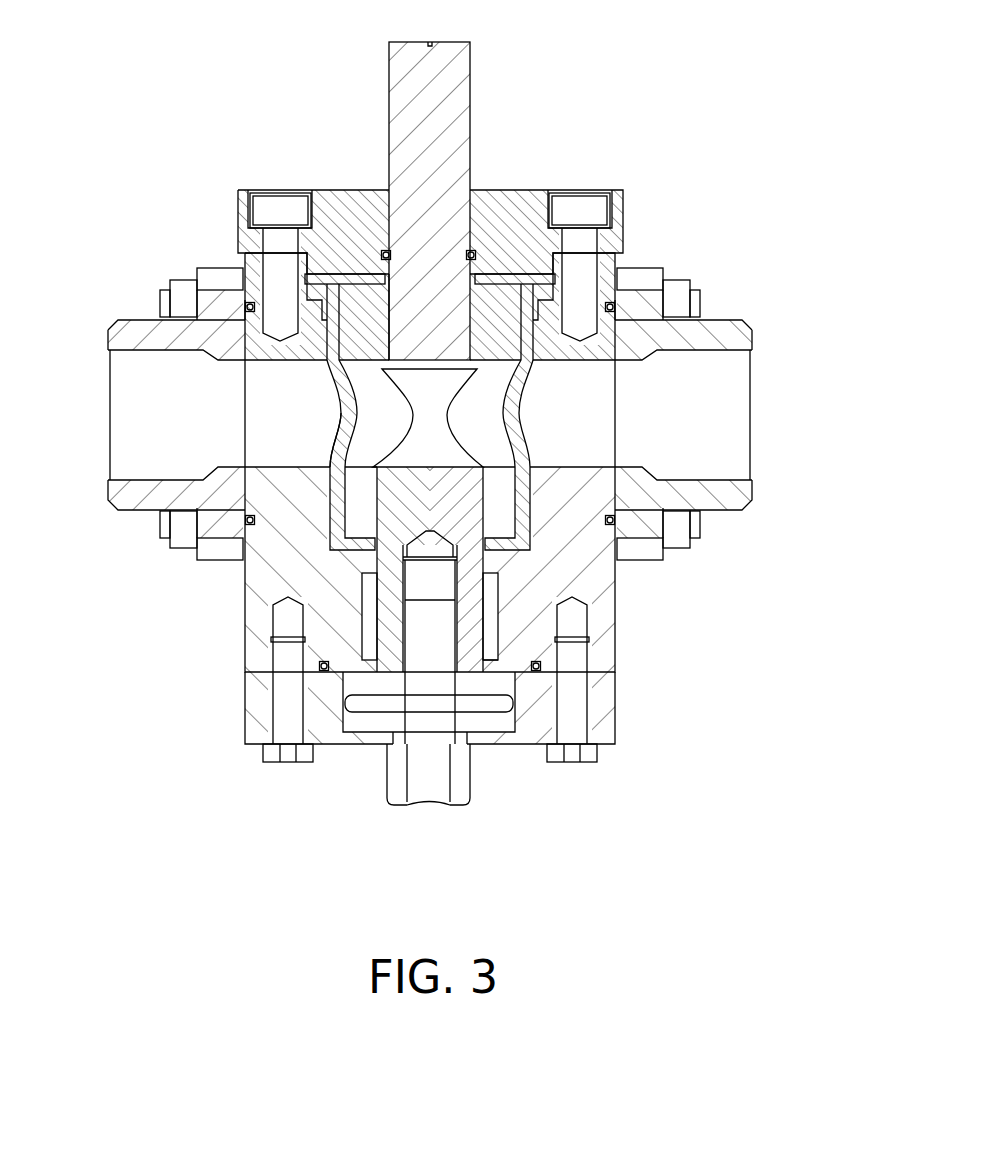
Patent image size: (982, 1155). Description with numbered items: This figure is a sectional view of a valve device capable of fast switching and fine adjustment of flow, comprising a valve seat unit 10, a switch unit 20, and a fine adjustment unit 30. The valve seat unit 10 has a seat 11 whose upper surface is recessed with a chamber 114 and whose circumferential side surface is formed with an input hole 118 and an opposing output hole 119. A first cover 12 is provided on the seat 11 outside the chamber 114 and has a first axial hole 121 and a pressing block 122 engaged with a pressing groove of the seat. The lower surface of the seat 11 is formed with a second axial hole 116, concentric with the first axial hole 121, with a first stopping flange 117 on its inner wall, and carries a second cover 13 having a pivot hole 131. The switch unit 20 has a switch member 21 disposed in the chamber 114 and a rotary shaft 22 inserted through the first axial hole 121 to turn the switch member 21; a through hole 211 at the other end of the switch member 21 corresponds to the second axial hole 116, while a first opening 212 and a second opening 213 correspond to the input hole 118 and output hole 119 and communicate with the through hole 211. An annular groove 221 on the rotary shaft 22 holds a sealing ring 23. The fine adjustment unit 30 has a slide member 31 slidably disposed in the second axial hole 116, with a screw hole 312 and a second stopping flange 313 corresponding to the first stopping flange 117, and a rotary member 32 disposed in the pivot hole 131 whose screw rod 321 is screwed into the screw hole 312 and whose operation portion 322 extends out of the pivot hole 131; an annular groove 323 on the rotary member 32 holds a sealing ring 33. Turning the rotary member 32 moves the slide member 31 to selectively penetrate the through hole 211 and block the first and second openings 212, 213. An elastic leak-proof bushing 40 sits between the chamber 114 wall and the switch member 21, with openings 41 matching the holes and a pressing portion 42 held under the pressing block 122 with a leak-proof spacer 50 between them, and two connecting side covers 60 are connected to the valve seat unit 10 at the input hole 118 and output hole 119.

The valve seat unit 10 is at (424, 439).
The seat 11 is at (613, 655).
The first cover 12 is at (437, 217).
The second cover 13 is at (470, 756).
The switch unit 20 is at (515, 336).
The switch member 21 is at (500, 328).
The rotary shaft 22 is at (389, 60).
The sealing ring 23 is at (352, 268).
The fine adjustment unit 30 is at (415, 723).
The slide member 31 is at (357, 618).
The rotary member 32 is at (447, 632).
The sealing ring 33 is at (325, 712).
The leak-proof bushing 40 is at (407, 365).
The openings 41 is at (277, 360).
The pressing portion 42 is at (390, 256).
The leak-proof spacer 50 is at (312, 318).
The connecting side covers 60 is at (120, 520).
The chamber 114 is at (323, 503).
The second axial hole 116 is at (367, 645).
The first stopping flange 117 is at (492, 562).
The input hole 118 is at (615, 400).
The output hole 119 is at (240, 383).
The first axial hole 121 is at (383, 217).
The pressing block 122 is at (545, 265).
The pivot hole 131 is at (472, 740).
The through hole 211 is at (202, 446).
The first opening 212 is at (493, 452).
The second opening 213 is at (370, 430).
The annular groove 221 is at (476, 250).
The screw hole 312 is at (457, 593).
The second stopping flange 313 is at (490, 665).
The screw rod 321 is at (382, 585).
The operation portion 322 is at (405, 806).
The annular groove 323 is at (345, 700).